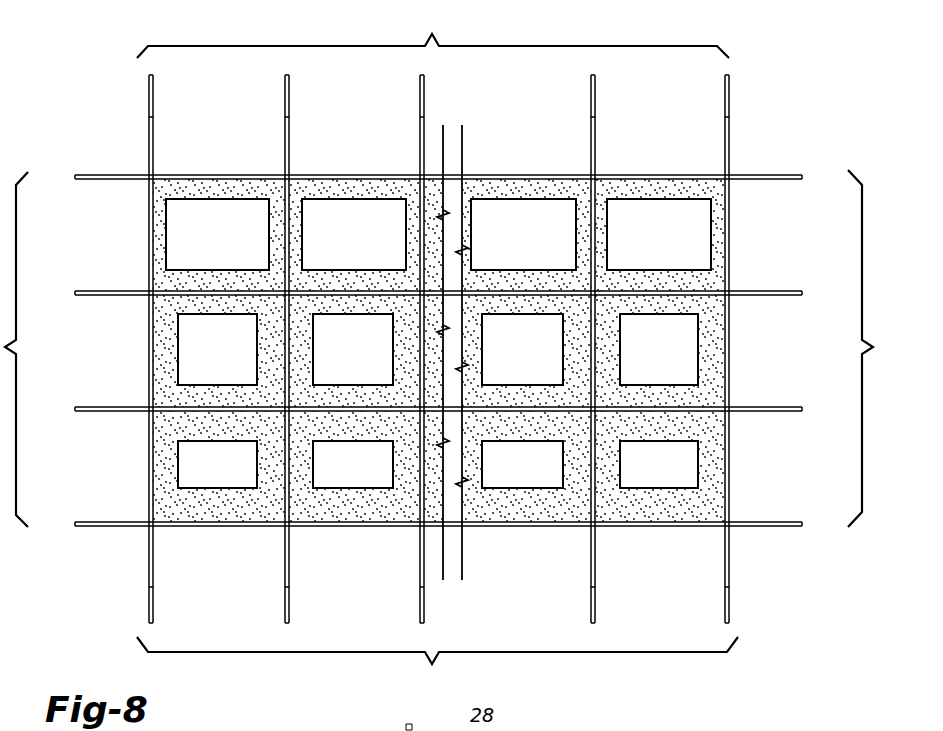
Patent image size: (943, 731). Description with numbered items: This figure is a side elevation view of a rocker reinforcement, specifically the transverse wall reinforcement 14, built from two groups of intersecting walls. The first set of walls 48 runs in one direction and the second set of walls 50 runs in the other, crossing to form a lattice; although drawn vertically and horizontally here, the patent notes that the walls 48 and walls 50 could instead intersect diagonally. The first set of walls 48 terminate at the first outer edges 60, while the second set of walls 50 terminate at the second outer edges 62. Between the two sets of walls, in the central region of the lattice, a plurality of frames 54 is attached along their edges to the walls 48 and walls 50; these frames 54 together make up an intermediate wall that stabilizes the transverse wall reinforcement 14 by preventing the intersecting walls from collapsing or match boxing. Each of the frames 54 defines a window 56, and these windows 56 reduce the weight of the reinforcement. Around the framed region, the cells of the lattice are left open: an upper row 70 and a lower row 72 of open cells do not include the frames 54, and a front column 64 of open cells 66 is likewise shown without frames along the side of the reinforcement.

The transverse wall reinforcement 14 is at (110, 126).
The first set of walls 48 is at (218, 290).
The second set of walls 50 is at (288, 238).
The frames 54 is at (297, 355).
The window 56 is at (524, 462).
The first outer edges 60 is at (800, 524).
The second outer edges 62 is at (287, 76).
The front column 64 is at (453, 348).
The open cells 66 is at (705, 108).
The upper row 70 is at (433, 33).
The lower row 72 is at (437, 667).